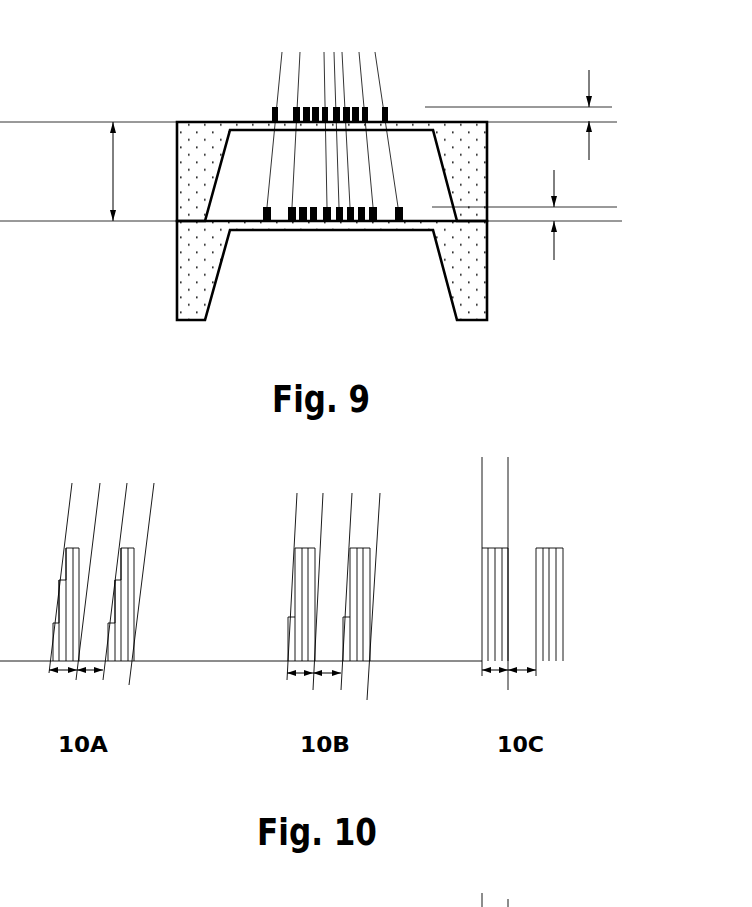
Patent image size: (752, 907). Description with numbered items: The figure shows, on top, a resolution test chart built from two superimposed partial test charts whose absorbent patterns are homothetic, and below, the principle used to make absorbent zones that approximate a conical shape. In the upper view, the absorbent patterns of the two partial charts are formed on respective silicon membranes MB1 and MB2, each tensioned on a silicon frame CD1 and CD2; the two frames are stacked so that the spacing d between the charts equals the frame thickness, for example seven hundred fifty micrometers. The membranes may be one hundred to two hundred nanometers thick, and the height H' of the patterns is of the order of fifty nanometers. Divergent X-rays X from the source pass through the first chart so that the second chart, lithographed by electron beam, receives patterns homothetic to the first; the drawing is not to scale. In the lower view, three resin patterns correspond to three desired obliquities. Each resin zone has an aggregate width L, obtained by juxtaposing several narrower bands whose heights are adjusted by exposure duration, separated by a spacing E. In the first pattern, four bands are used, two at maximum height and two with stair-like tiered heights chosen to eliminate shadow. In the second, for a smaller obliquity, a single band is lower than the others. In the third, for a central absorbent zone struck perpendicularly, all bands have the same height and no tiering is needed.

In FIG. 9, the silicon frame CD1 is at (193, 167).
In FIG. 9, the silicon frame CD2 is at (193, 270).
In FIG. 9, the silicon membrane MB1 is at (250, 127).
In FIG. 9, the silicon membrane MB2 is at (253, 225).
In FIG. 9, the X-rays X is at (332, 110).
In FIG. 9, the spacing between the two test charts d is at (100, 171).
In FIG. 9, the height of the patterns H' is at (559, 167).
In FIG. 10, the aggregate width of resin zone L is at (278, 689).
In FIG. 10, the pad spacing E is at (306, 689).